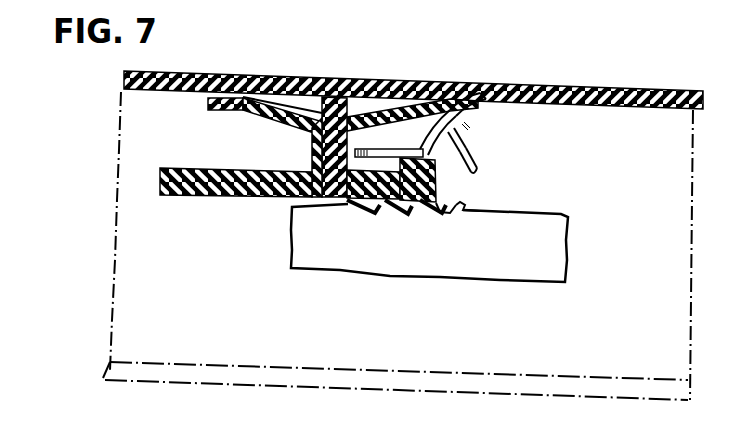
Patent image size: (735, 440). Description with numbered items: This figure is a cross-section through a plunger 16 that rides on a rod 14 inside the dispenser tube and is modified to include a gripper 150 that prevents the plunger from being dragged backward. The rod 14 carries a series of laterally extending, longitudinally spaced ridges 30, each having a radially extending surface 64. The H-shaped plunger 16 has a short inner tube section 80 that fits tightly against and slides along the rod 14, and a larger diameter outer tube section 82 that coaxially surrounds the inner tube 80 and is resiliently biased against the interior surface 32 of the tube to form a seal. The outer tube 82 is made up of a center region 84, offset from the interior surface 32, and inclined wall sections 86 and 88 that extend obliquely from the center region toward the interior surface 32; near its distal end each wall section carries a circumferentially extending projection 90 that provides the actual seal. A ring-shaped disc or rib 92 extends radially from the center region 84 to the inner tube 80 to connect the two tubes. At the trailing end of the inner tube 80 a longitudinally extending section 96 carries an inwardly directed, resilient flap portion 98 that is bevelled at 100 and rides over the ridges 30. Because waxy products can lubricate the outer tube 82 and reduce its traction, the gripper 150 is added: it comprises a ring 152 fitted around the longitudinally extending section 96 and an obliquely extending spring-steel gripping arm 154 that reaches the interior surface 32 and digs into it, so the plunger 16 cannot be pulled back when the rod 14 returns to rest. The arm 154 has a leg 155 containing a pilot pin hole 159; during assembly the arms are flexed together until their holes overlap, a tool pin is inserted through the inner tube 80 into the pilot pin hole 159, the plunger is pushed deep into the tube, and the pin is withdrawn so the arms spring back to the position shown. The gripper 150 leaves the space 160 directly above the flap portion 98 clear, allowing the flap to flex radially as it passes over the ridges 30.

The rod 14 is at (445, 231).
The plunger 16 is at (198, 103).
The ridges 30 is at (467, 212).
The interior surface 32 is at (646, 107).
The radially extending surface 64 is at (360, 207).
The inner tube section 80 is at (182, 167).
The outer tube section 82 is at (252, 113).
The center region 84 is at (332, 117).
The inclined wall section 86 is at (295, 107).
The inclined wall section 88 is at (368, 113).
The circumferentially extending projection 90 is at (413, 77).
The ring-shaped disc or rib 92 is at (318, 157).
The longitudinally extending section 96 is at (430, 173).
The flap portion 98 is at (437, 215).
The bevel 100 is at (420, 207).
The gripper 150 is at (501, 97).
The ring 152 is at (377, 150).
The gripping arm 154 is at (490, 113).
The leg 155 is at (506, 168).
The pilot pin hole 159 is at (512, 178).
The space 160 is at (463, 172).